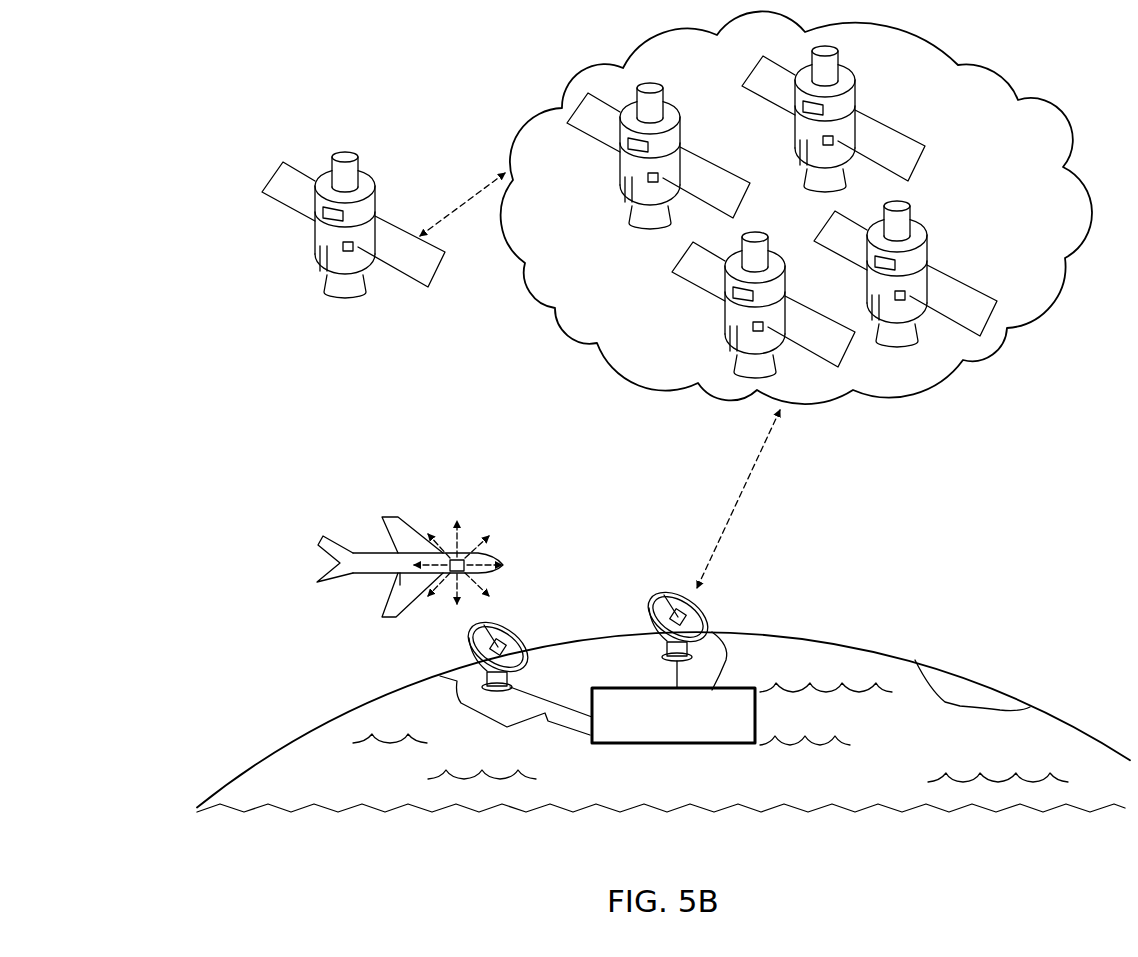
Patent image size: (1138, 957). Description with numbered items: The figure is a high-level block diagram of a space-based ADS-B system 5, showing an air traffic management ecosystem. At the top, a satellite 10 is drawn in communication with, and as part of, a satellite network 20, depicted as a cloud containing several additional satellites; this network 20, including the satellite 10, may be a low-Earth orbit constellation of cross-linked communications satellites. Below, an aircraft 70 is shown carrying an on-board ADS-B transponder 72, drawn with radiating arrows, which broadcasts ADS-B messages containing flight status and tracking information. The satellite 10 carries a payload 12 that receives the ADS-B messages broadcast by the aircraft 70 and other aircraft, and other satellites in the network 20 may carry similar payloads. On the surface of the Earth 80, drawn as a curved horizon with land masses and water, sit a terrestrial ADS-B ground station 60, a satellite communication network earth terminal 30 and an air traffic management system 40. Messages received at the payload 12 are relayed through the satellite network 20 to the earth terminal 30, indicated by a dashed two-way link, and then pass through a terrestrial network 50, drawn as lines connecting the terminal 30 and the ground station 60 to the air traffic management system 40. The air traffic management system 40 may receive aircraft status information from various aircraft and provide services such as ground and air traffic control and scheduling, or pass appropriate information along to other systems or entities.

The space-based ADS-B system 5 is at (187, 118).
The satellite 10 is at (334, 210).
The payload 12 is at (327, 199).
The satellite network 20 is at (1042, 98).
The satellite communication network earth terminal 30 is at (708, 616).
The air traffic management system 40 is at (677, 746).
The terrestrial network 50 is at (671, 680).
The terrestrial ADS-B ground station 60 is at (523, 661).
The aircraft 70 is at (363, 553).
The ADS-B transponder 72 is at (463, 559).
The Earth 80 is at (902, 660).